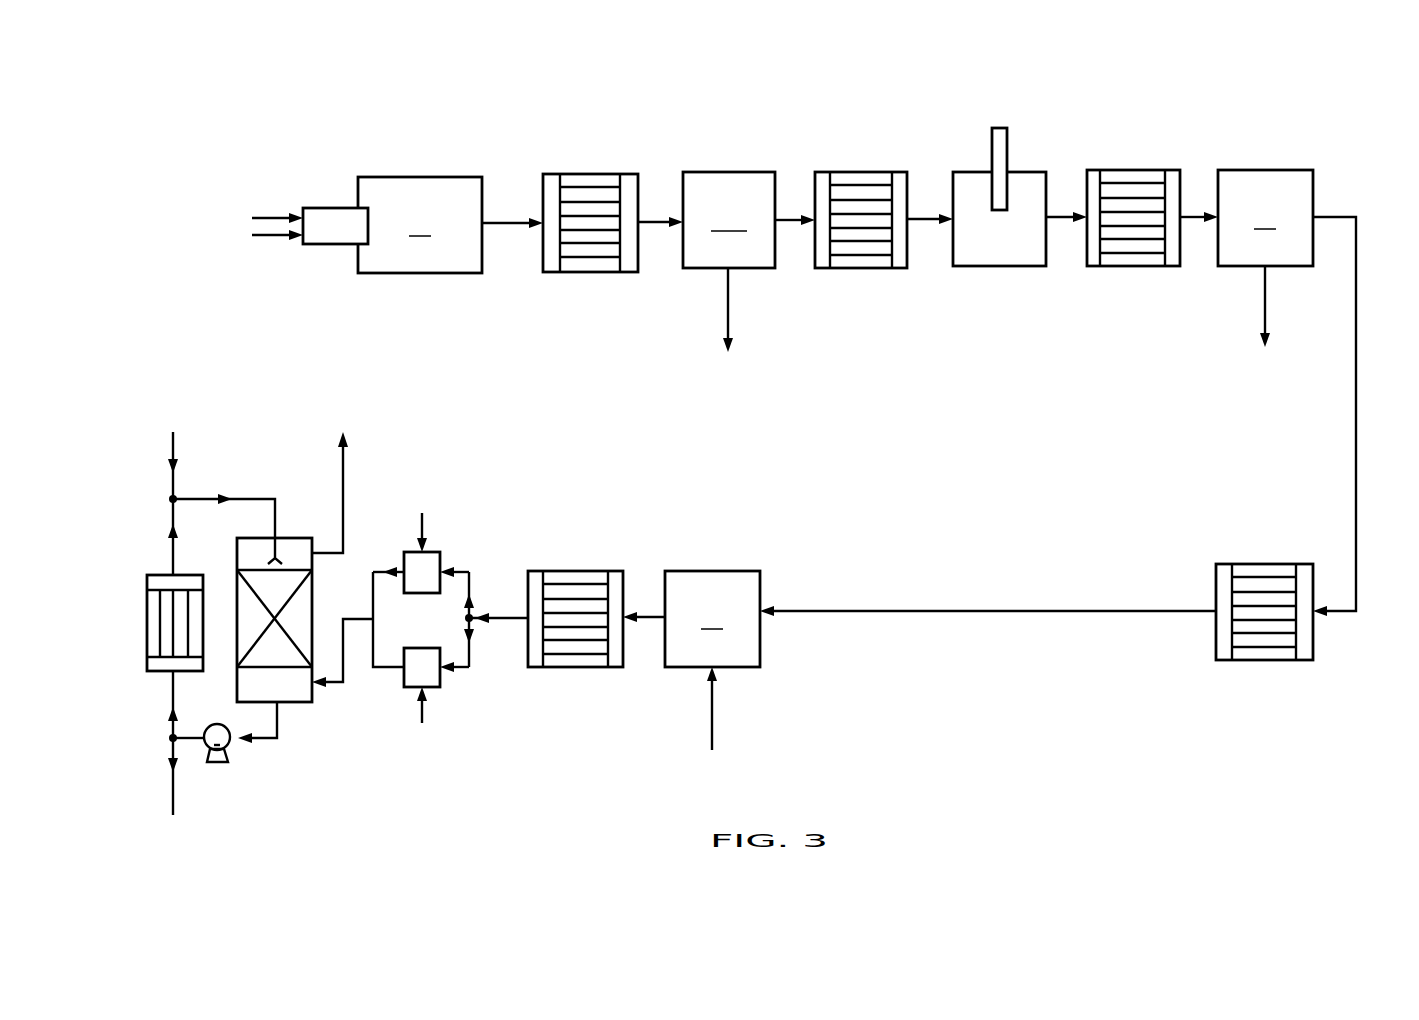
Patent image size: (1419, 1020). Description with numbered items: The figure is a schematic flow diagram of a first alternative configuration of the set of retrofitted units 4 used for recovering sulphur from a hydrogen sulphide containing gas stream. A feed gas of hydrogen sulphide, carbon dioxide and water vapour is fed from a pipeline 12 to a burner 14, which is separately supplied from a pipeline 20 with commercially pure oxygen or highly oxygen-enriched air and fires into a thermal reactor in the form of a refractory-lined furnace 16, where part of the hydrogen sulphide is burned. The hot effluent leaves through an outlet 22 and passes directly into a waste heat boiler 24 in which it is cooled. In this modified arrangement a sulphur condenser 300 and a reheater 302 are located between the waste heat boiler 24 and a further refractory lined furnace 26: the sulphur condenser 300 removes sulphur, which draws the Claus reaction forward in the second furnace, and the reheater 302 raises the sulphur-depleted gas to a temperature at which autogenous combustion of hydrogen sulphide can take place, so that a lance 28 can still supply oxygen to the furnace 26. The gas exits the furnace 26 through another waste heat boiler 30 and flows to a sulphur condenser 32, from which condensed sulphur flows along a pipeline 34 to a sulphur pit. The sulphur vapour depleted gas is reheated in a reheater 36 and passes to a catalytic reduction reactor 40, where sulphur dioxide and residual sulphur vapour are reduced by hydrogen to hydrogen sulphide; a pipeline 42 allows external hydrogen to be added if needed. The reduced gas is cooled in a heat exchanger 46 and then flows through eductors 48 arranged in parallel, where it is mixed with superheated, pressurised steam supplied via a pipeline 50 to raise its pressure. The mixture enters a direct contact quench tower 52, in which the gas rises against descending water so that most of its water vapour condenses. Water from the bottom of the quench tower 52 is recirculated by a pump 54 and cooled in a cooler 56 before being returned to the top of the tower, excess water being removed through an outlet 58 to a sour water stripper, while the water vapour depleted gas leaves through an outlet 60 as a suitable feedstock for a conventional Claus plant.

The set of retrofitted units 4 is at (700, 112).
The pipeline 12 is at (260, 212).
The burner 14 is at (337, 208).
The refractory-lined furnace 16 is at (420, 225).
The pipeline 20 is at (260, 241).
The outlet 22 is at (503, 222).
The waste heat boiler 24 is at (597, 174).
The further refractory lined furnace 26 is at (970, 266).
The lance 28 is at (1002, 212).
The waste heat boiler 30 is at (1147, 170).
The sulphur condenser 32 is at (1265, 218).
The pipeline 34 is at (1262, 282).
The reheater 36 is at (1270, 660).
The catalytic reduction reactor 40 is at (712, 619).
The pipeline 42 is at (714, 702).
The heat exchanger 46 is at (600, 667).
The eductors 48 is at (440, 555).
The pipeline 50 is at (422, 520).
The quench tower 52 is at (318, 610).
The pump 54 is at (232, 745).
The cooler 56 is at (150, 575).
The outlet 58 is at (198, 797).
The outlet 60 is at (342, 490).
The sulphur condenser 300 is at (729, 262).
The reheater 302 is at (857, 268).